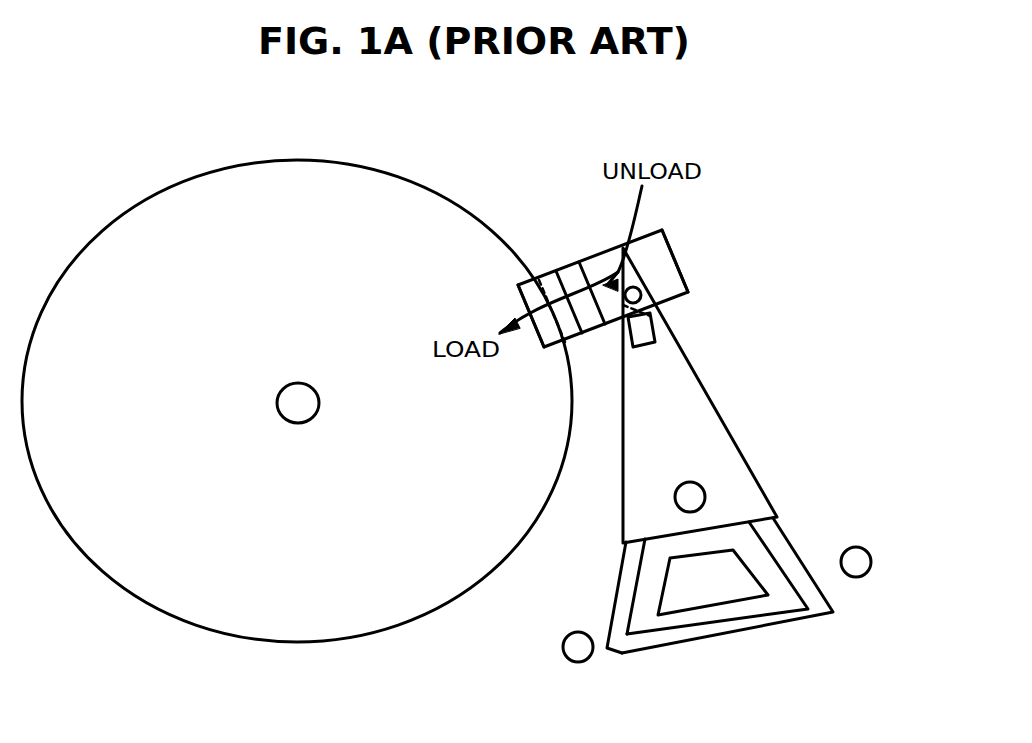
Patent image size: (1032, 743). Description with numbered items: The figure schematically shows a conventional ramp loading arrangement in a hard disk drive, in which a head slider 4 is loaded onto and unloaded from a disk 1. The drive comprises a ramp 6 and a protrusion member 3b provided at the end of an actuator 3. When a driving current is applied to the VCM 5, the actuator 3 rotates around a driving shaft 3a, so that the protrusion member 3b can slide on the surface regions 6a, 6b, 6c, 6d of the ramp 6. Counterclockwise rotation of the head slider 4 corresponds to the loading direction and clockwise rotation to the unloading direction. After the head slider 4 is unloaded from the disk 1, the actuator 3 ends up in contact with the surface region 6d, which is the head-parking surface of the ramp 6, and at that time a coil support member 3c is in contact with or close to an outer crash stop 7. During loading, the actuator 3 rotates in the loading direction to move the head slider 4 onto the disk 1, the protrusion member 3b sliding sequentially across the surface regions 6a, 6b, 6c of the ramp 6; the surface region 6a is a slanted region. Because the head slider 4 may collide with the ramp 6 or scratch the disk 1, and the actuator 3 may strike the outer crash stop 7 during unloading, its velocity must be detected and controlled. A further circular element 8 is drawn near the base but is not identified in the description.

The disk 1 is at (295, 160).
The actuator 3 is at (713, 433).
The driving shaft 3a is at (705, 496).
The protrusion member 3b is at (641, 298).
The coil support member 3c is at (628, 573).
The head slider 4 is at (648, 333).
The VCM 5 is at (708, 623).
The ramp 6 is at (681, 248).
The surface region 6a is at (676, 272).
The surface region 6b is at (578, 270).
The surface region 6c is at (553, 283).
The surface region 6d is at (531, 283).
The outer crash stop 7 is at (560, 651).
The mounting hole 8 is at (868, 561).